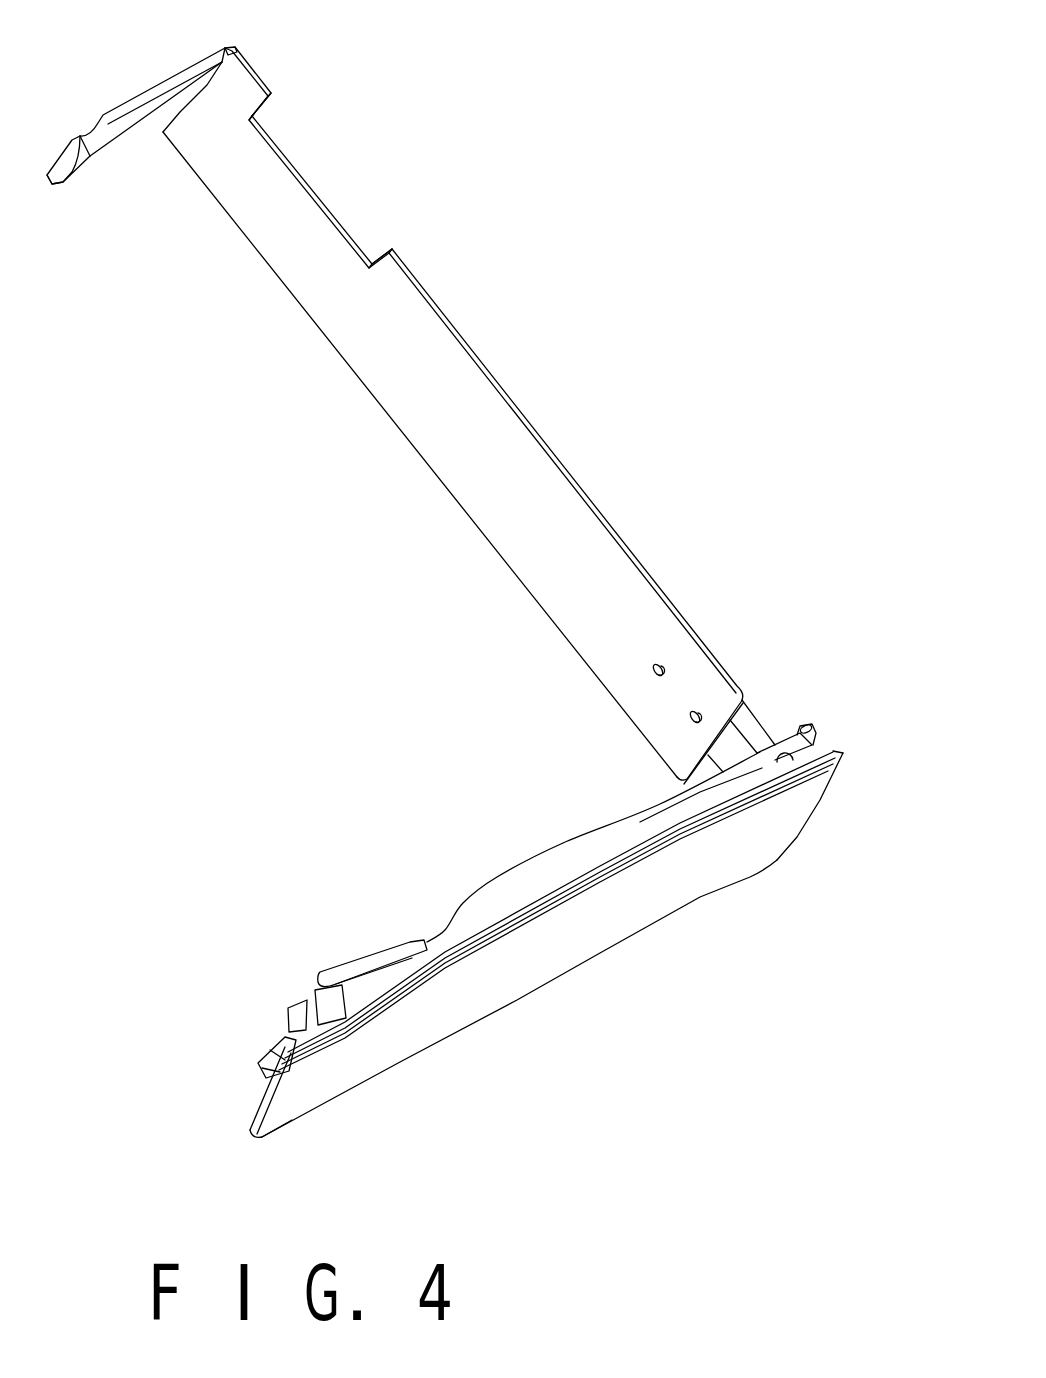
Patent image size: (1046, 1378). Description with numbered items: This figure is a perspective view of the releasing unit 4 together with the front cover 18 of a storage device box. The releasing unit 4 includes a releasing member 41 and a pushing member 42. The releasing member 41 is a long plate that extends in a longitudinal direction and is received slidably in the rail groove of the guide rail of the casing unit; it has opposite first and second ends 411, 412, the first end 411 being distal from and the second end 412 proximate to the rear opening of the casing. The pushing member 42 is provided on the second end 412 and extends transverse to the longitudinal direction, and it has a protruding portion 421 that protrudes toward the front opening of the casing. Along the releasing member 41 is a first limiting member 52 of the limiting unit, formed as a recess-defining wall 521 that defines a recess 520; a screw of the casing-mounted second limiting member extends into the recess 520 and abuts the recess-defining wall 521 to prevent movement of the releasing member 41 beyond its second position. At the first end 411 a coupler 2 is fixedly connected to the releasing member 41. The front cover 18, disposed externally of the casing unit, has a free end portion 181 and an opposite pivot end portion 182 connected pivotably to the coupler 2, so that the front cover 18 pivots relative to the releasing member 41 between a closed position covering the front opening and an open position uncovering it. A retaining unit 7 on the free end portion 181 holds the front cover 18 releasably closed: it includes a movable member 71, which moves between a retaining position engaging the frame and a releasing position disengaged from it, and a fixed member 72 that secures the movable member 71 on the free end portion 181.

The releasing unit 4 is at (495, 292).
The releasing member 41 is at (510, 393).
The first end 411 is at (693, 677).
The second end 412 is at (230, 97).
The pushing member 42 is at (152, 102).
The protruding portion 421 is at (73, 158).
The first limiting member 52 is at (315, 182).
The recess 520 is at (300, 132).
The recess-defining wall 521 is at (340, 213).
The coupler 2 is at (750, 720).
The front cover 18 is at (667, 883).
The free end portion 181 is at (292, 1094).
The pivot end portion 182 is at (800, 817).
The retaining unit 7 is at (295, 973).
The movable member 71 is at (273, 1043).
The fixed member 72 is at (347, 977).